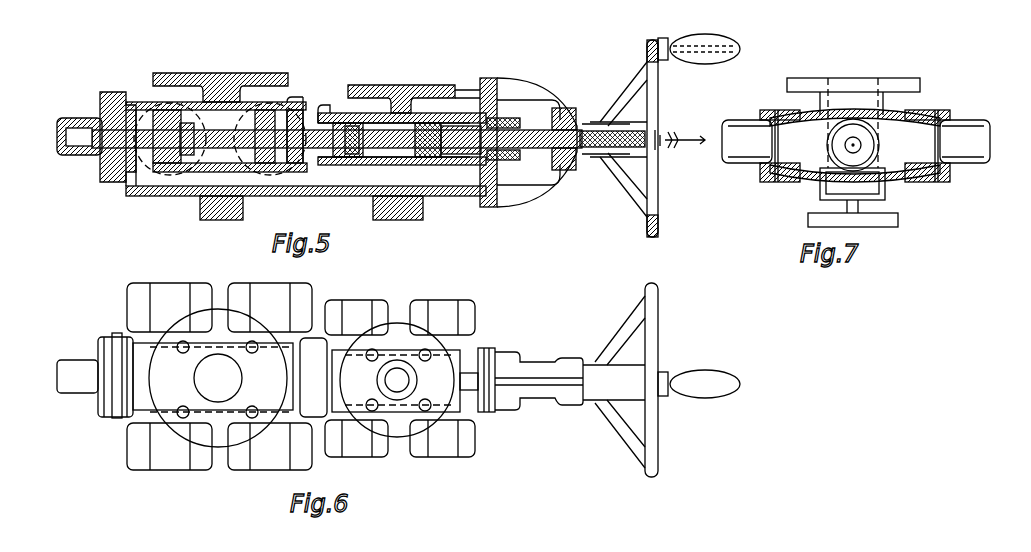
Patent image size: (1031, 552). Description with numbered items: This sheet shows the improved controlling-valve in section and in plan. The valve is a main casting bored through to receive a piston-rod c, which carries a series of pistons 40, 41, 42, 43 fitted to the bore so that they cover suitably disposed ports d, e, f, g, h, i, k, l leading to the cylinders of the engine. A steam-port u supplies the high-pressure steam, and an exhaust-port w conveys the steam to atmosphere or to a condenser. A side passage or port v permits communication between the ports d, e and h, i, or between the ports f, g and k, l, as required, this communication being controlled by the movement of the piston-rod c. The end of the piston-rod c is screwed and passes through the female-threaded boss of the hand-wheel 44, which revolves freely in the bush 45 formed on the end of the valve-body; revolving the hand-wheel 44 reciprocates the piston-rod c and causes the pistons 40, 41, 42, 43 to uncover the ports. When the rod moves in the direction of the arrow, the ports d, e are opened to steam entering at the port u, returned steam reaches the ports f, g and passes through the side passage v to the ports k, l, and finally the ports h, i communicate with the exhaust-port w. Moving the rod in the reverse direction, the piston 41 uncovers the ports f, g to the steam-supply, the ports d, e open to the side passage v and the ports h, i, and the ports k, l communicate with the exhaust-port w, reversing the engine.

In FIG. 5, the exhaust-port w is at (225, 87).
In FIG. 7, the exhaust-port w is at (855, 92).
In FIG. 5, the port k is at (152, 172).
In FIG. 6, the port k is at (173, 300).
In FIG. 5, the piston 43 is at (172, 172).
In FIG. 5, the port h is at (262, 166).
In FIG. 7, the port h is at (976, 135).
In FIG. 6, the port h is at (270, 300).
In FIG. 5, the piston 42 is at (272, 168).
In FIG. 5, the side passage or port v is at (392, 155).
In FIG. 7, the side passage or port v is at (840, 185).
In FIG. 5, the port f is at (350, 162).
In FIG. 6, the port f is at (352, 308).
In FIG. 5, the piston 41 is at (354, 162).
In FIG. 5, the steam-port u is at (403, 95).
In FIG. 5, the port l is at (468, 94).
In FIG. 6, the port l is at (170, 455).
In FIG. 5, the piston 40 is at (466, 150).
In FIG. 5, the port d is at (443, 156).
In FIG. 6, the port d is at (445, 310).
In FIG. 5, the piston-rod c is at (538, 152).
In FIG. 7, the piston-rod c is at (868, 160).
In FIG. 5, the bush 45 is at (570, 112).
In FIG. 5, the hand-wheel 44 is at (588, 138).
In FIG. 7, the port i is at (735, 130).
In FIG. 6, the port i is at (265, 455).
In FIG. 6, the port g is at (352, 445).
In FIG. 6, the port e is at (442, 445).